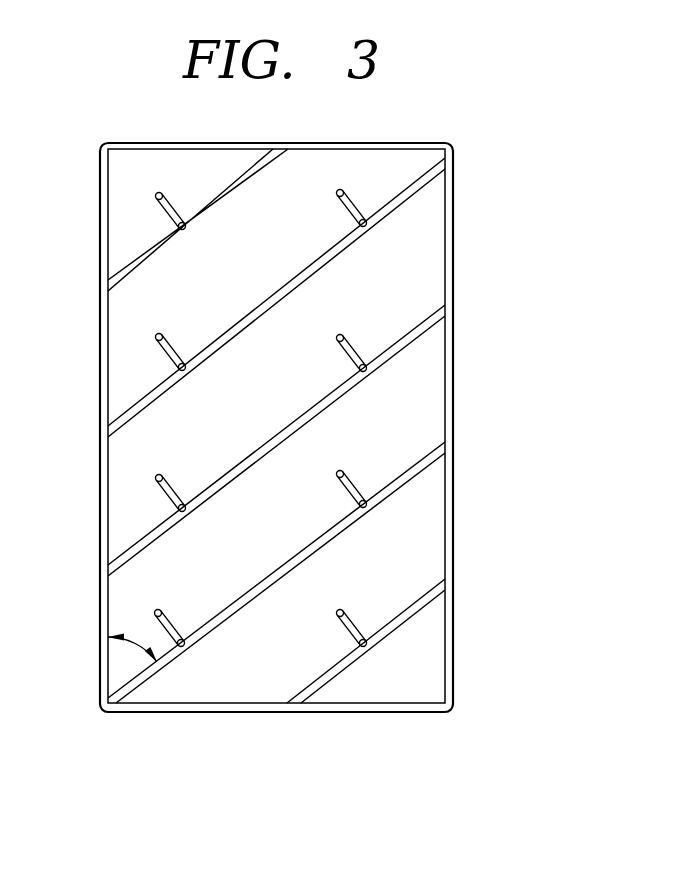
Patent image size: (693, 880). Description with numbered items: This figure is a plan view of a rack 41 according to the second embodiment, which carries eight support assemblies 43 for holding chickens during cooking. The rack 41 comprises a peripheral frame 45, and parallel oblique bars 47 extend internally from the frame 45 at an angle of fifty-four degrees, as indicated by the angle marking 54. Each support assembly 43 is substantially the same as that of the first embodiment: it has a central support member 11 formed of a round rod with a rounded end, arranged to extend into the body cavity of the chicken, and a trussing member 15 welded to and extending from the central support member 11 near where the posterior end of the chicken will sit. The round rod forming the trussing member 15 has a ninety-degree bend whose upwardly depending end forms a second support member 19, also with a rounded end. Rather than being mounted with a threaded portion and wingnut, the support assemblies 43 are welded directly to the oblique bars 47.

The central support member 11 is at (186, 374).
The trussing member 15 is at (170, 349).
The second support member 19 is at (157, 334).
The rack 41 is at (483, 202).
The support assemblies 43 is at (358, 328).
The peripheral frame 45 is at (455, 360).
The oblique bars 47 is at (345, 393).
The rail angle 54 is at (108, 637).